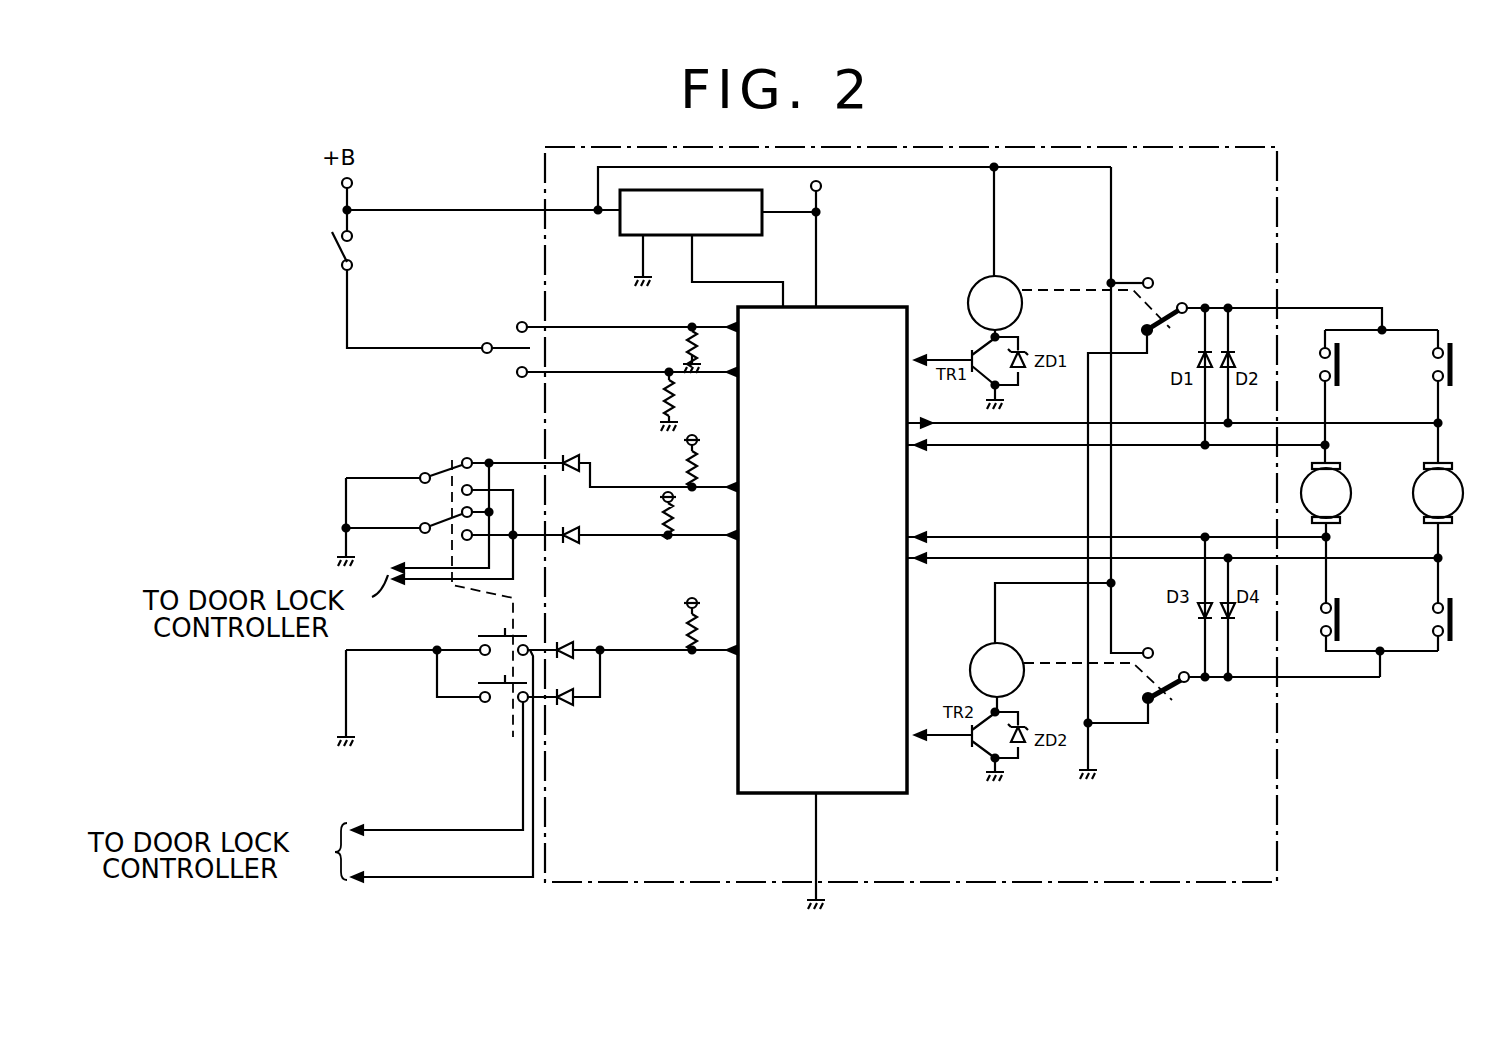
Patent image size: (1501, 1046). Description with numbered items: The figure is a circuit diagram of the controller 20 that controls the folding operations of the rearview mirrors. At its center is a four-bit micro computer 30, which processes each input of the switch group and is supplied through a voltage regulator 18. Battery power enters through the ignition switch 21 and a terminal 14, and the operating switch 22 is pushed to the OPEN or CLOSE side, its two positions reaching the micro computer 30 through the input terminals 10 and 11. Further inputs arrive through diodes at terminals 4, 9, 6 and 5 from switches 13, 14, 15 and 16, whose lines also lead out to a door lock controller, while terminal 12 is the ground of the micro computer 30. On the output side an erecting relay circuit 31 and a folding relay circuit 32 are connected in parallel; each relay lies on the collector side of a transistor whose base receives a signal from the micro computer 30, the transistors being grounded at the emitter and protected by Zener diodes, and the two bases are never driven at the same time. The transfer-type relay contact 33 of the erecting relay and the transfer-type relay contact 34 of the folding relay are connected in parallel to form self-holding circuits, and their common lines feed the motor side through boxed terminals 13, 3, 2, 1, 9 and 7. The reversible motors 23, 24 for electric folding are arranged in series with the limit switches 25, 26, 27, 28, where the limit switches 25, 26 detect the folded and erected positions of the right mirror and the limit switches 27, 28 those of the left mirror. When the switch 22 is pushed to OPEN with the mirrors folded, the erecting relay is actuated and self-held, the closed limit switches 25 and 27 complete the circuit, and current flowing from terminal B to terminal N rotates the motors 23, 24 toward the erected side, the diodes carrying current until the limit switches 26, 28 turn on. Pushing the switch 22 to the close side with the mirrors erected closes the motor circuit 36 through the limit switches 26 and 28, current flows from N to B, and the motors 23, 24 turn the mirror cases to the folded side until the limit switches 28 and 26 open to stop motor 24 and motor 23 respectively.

The output terminal 1 is at (1277, 536).
The output terminal 2 is at (1273, 446).
The output terminal 3 is at (1276, 421).
The input terminal 4 is at (543, 463).
The input terminal 5 is at (548, 702).
The input terminal 6 is at (548, 647).
The output terminal 7 is at (1277, 679).
The input/output terminal 9 is at (552, 540).
The open input terminal 10 is at (545, 326).
The close input terminal 11 is at (545, 374).
The ground terminal 12 is at (812, 888).
The door switch / terminal 13 is at (440, 470).
The door switch / power terminal 14 is at (545, 210).
The door lock knob switch 15 is at (492, 633).
The door lock knob switch 16 is at (495, 703).
The voltage regulator 18 is at (620, 232).
The controller for controlling the folding 20 is at (1205, 147).
The ignition switch 21 is at (334, 252).
The switch 22 is at (502, 350).
The motor for electric folding 23 is at (1462, 490).
The motor for electric folding 24 is at (1350, 490).
The limit switch 25 is at (1456, 364).
The limit switch 26 is at (1455, 624).
The limit switch 27 is at (1343, 364).
The limit switch 28 is at (1342, 624).
The micro computer 30 is at (903, 307).
The erecting relay circuit 31 is at (997, 257).
The folding relay circuit 32 is at (992, 625).
The transfer-type relay contact 33 is at (1164, 301).
The transfer-type relay contact 34 is at (1158, 709).
The motor circuit 36 is at (1350, 680).